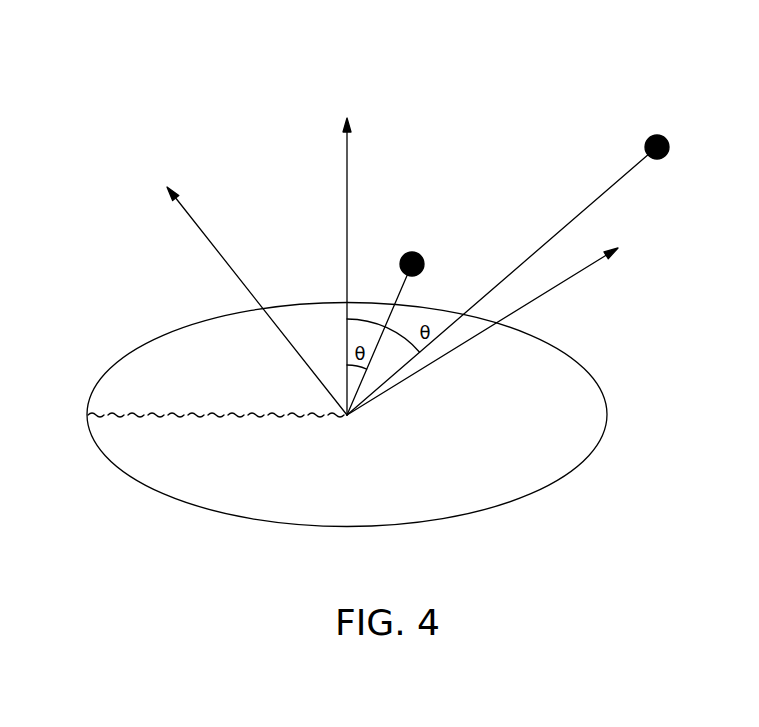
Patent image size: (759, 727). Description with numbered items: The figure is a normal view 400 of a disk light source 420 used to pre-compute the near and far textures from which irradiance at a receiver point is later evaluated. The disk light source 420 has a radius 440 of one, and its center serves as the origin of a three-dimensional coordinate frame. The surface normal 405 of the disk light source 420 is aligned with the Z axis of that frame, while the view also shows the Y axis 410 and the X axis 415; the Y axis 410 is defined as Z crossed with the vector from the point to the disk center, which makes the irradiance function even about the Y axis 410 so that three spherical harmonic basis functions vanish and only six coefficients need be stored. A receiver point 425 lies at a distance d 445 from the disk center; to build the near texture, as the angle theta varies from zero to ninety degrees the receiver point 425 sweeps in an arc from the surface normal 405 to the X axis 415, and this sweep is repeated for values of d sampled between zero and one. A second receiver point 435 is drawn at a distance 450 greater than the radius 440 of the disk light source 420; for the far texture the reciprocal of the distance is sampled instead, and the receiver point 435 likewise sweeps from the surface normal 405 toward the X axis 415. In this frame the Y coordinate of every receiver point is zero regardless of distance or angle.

The normal view 400 is at (398, 84).
The surface normal 405 is at (348, 165).
The Y axis 410 is at (208, 243).
The X axis 415 is at (438, 362).
The disk light source 420 is at (607, 397).
The receiver point 425 is at (413, 252).
The receiver point 435 is at (660, 133).
The radius 440 is at (258, 418).
The distance d 445 is at (396, 293).
The distance 450 is at (552, 237).